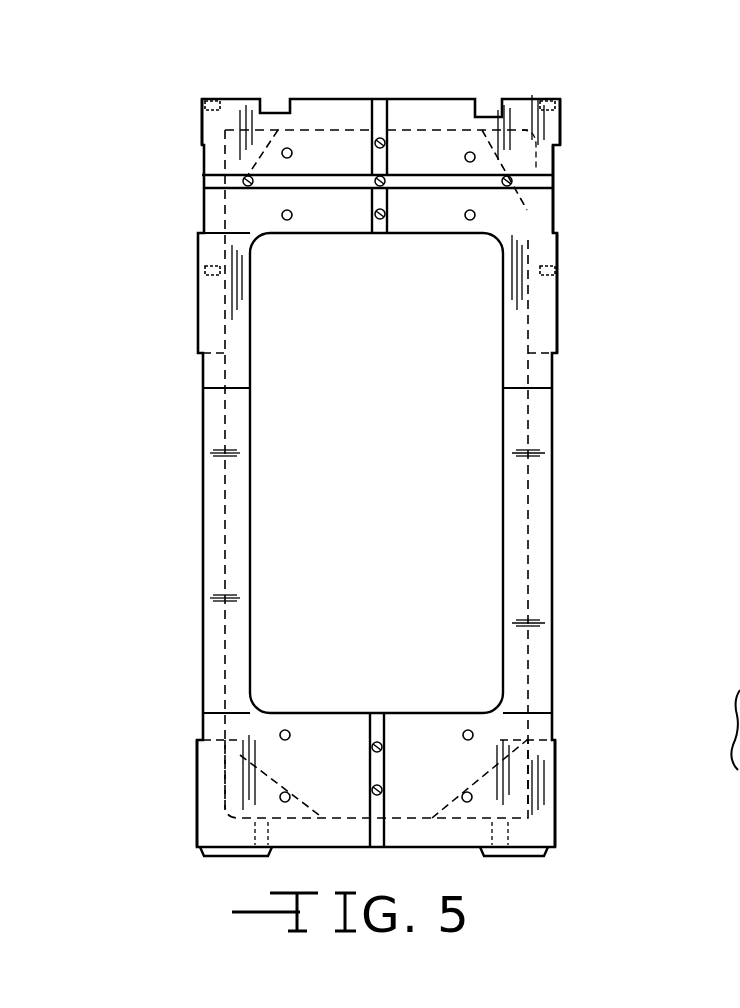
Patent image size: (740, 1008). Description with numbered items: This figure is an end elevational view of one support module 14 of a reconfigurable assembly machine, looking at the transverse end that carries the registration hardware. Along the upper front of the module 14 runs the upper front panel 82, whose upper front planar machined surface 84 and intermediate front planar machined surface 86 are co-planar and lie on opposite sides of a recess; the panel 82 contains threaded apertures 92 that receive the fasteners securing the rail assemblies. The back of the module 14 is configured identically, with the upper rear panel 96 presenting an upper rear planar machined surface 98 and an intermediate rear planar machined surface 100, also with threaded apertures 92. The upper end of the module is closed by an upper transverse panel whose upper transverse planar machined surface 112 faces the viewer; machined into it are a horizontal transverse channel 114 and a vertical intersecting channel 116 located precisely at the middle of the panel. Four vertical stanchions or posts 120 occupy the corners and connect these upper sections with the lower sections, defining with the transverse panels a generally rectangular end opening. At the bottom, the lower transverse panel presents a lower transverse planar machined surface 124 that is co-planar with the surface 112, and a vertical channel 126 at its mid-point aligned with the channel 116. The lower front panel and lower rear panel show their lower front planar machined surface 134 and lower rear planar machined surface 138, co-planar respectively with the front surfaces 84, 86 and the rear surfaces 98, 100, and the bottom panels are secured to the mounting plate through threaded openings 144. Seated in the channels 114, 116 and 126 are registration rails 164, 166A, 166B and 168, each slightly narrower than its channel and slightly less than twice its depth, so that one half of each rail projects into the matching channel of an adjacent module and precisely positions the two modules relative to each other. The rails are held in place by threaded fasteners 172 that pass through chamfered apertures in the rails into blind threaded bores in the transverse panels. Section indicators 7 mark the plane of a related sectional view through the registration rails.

The support module 14 is at (215, 72).
The threaded apertures 92 is at (203, 105).
The upper front planar machined surface 84 is at (200, 120).
The threaded fasteners 172 is at (243, 181).
The upper front panel 82 is at (185, 214).
The intermediate front planar machined surface 86 is at (198, 325).
The upper transverse planar machined surface 112 is at (350, 166).
The first horizontal transverse channel 114 is at (505, 185).
The vertical intersecting channel 116 is at (388, 164).
The registration rail 166A is at (388, 158).
The registration rail 166B is at (385, 236).
The section line 7 is at (362, 216).
The upper rear planar machined surface 98 is at (560, 128).
The registration rail 164 is at (556, 180).
The upper rear panel 96 is at (620, 176).
The intermediate rear planar machined surface 100 is at (558, 256).
The stanchions or posts 120 is at (540, 528).
The registration rail 168 is at (372, 713).
The lower transverse planar machined surface 124 is at (345, 786).
The vertical channel 126 is at (380, 742).
The lower front planar machined surface 134 is at (197, 782).
The lower rear planar machined surface 138 is at (558, 780).
The threaded openings 144 is at (530, 850).